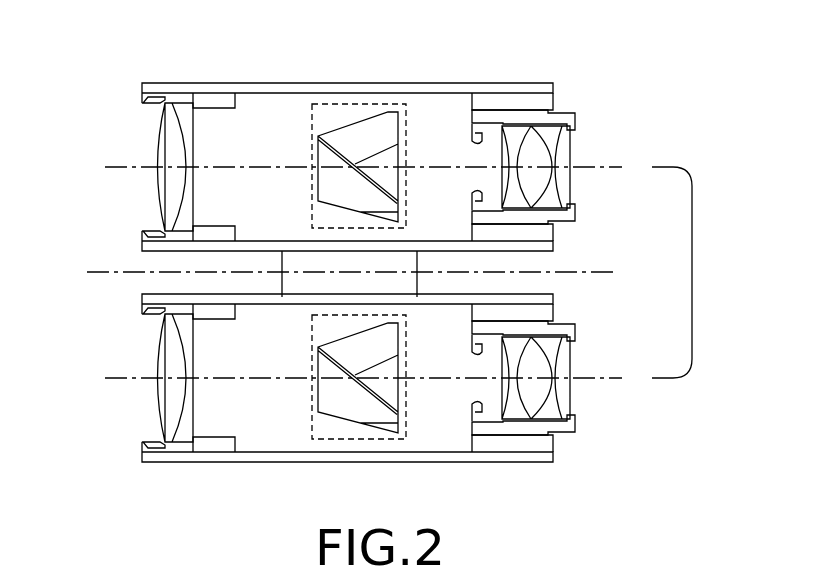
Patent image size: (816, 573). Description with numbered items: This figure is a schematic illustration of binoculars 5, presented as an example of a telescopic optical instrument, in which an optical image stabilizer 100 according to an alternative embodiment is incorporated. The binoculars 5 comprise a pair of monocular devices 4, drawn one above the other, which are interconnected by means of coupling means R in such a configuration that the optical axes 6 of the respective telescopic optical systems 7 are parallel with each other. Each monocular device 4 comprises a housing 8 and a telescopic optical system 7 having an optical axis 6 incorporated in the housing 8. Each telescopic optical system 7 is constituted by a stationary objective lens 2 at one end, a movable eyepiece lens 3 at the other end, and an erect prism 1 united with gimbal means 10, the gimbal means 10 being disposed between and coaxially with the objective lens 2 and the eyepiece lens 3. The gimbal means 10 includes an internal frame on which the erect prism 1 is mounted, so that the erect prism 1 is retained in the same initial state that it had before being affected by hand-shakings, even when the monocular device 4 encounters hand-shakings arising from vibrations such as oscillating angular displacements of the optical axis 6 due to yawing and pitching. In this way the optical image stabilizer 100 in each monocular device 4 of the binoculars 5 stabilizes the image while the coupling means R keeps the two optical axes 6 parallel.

The optical image stabilizer 100 is at (265, 116).
The monocular device 4 is at (305, 74).
The telescopic optical system 7 is at (449, 122).
The housing 8 is at (553, 84).
The eyepiece lens 3 is at (571, 144).
The objective lens 2 is at (157, 191).
The erect prism 1 is at (354, 113).
The gimbal means 10 is at (407, 115).
The optical axis 6 is at (116, 166).
The coupling means R is at (282, 263).
The binoculars 5 is at (692, 272).